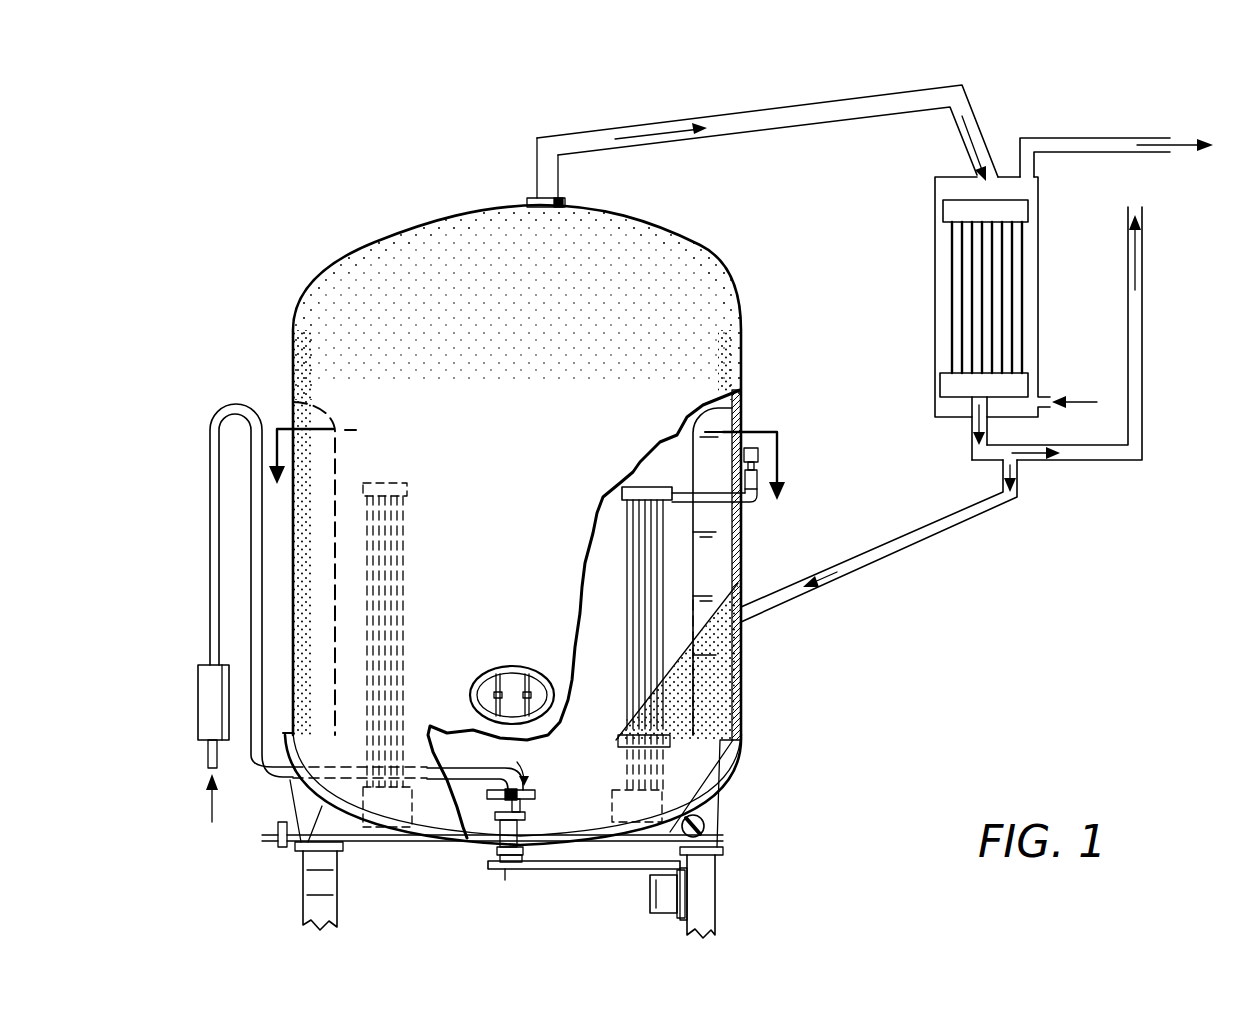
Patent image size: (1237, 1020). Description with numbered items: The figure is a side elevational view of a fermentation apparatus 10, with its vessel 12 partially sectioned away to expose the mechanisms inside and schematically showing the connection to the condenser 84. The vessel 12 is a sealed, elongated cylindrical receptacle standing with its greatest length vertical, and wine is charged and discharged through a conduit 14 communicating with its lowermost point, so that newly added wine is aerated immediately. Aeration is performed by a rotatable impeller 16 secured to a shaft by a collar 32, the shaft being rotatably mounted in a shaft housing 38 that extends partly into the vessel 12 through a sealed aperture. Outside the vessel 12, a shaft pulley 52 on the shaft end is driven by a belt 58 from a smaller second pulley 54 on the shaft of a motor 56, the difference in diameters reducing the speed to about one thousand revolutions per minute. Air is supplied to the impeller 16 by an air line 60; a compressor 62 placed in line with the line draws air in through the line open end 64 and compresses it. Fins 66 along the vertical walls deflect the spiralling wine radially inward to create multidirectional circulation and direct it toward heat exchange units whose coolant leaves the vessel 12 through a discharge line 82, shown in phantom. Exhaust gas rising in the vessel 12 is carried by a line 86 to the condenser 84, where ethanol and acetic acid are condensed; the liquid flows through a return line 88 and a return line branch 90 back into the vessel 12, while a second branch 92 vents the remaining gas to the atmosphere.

The fermentation apparatus 10 is at (252, 205).
The vessel 12 is at (712, 237).
The conduit 14 is at (262, 840).
The rotatable impeller 16 is at (582, 768).
The collar 32 is at (490, 800).
The shaft housing 38 is at (527, 828).
The shaft pulley 52 is at (505, 870).
The second pulley 54 is at (668, 862).
The motor 56 is at (660, 913).
The belt 58 is at (588, 870).
The air line 60 is at (252, 573).
The compressor 62 is at (208, 703).
The line open end 64 is at (208, 757).
The fins 66 is at (715, 556).
The discharge line 82 is at (720, 830).
The condenser 84 is at (1040, 283).
The line 86 is at (745, 112).
The return line 88 is at (972, 437).
The return line branch 90 is at (948, 530).
The second branch 92 is at (1098, 462).